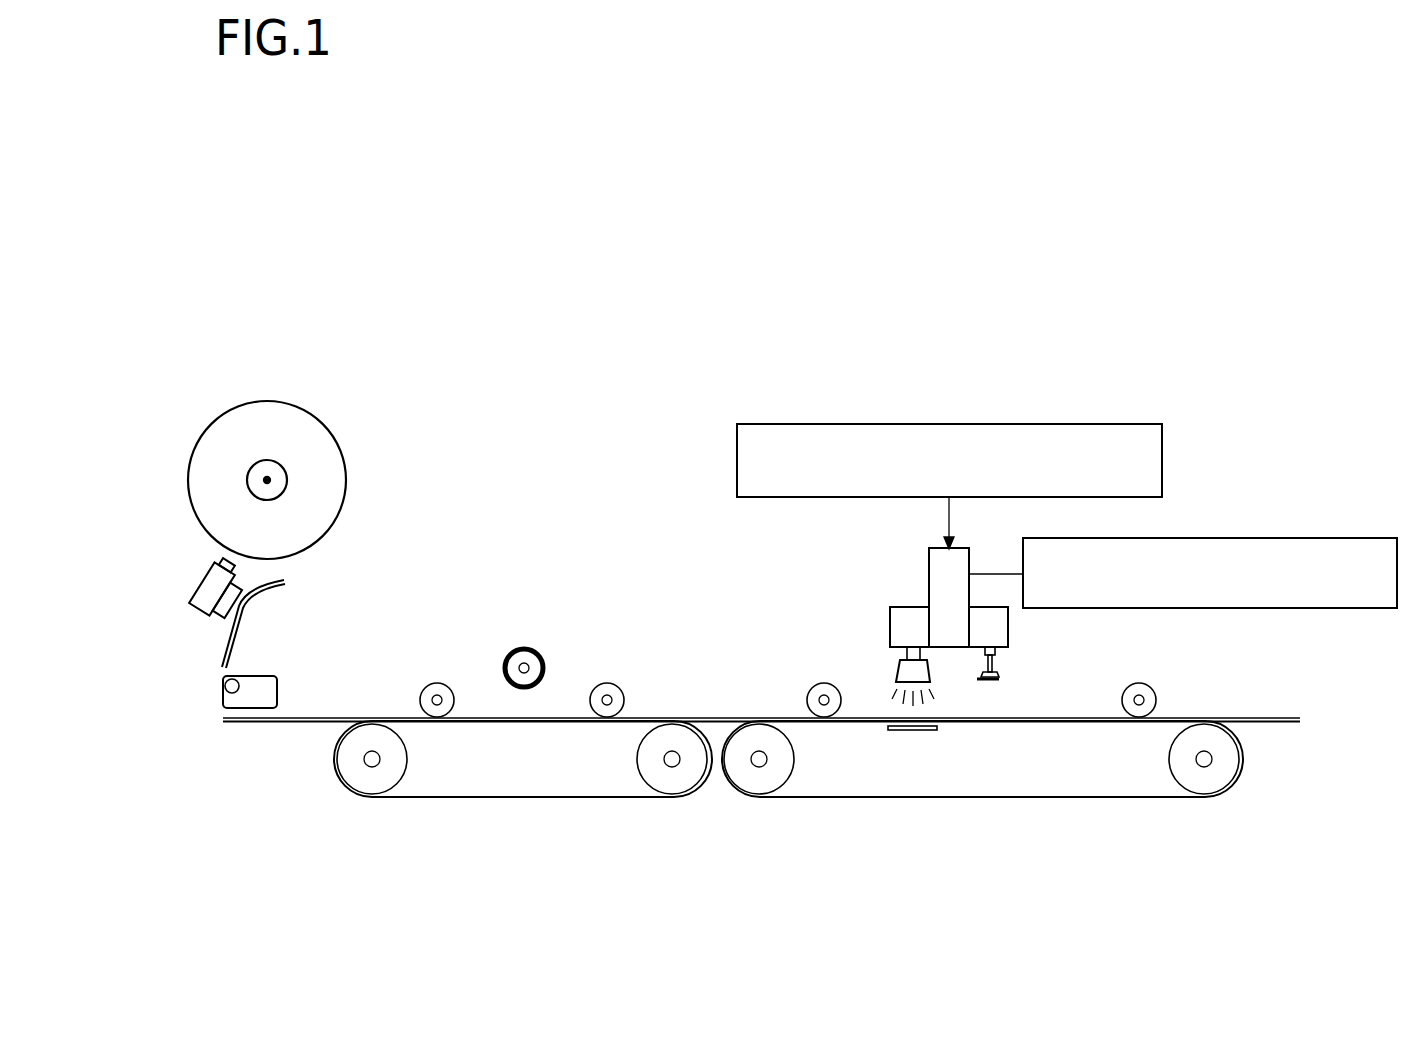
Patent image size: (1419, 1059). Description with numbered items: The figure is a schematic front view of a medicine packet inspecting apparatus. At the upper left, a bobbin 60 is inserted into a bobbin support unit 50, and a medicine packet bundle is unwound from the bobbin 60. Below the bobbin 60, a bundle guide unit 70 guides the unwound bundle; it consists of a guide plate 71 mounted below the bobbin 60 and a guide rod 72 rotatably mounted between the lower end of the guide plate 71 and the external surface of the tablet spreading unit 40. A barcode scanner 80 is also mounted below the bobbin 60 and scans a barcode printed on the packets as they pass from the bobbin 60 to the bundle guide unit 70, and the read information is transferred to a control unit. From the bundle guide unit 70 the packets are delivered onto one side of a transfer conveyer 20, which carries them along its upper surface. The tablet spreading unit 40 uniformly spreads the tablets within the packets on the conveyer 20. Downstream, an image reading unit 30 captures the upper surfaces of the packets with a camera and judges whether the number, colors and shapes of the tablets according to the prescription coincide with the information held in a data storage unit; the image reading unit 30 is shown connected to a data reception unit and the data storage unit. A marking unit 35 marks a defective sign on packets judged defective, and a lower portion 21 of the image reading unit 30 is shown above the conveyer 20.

The transfer conveyer 20 is at (450, 797).
The lighting unit 21 is at (890, 618).
The image reading unit 30 is at (958, 560).
The marking unit 35 is at (996, 681).
The tablet spreading unit 40 is at (490, 636).
The bobbin support unit 50 is at (280, 476).
The bobbin 60 is at (337, 493).
The bundle guide unit 70 is at (172, 660).
The guide plate 71 is at (229, 640).
The guide rod 72 is at (225, 685).
The barcode scanner 80 is at (203, 583).